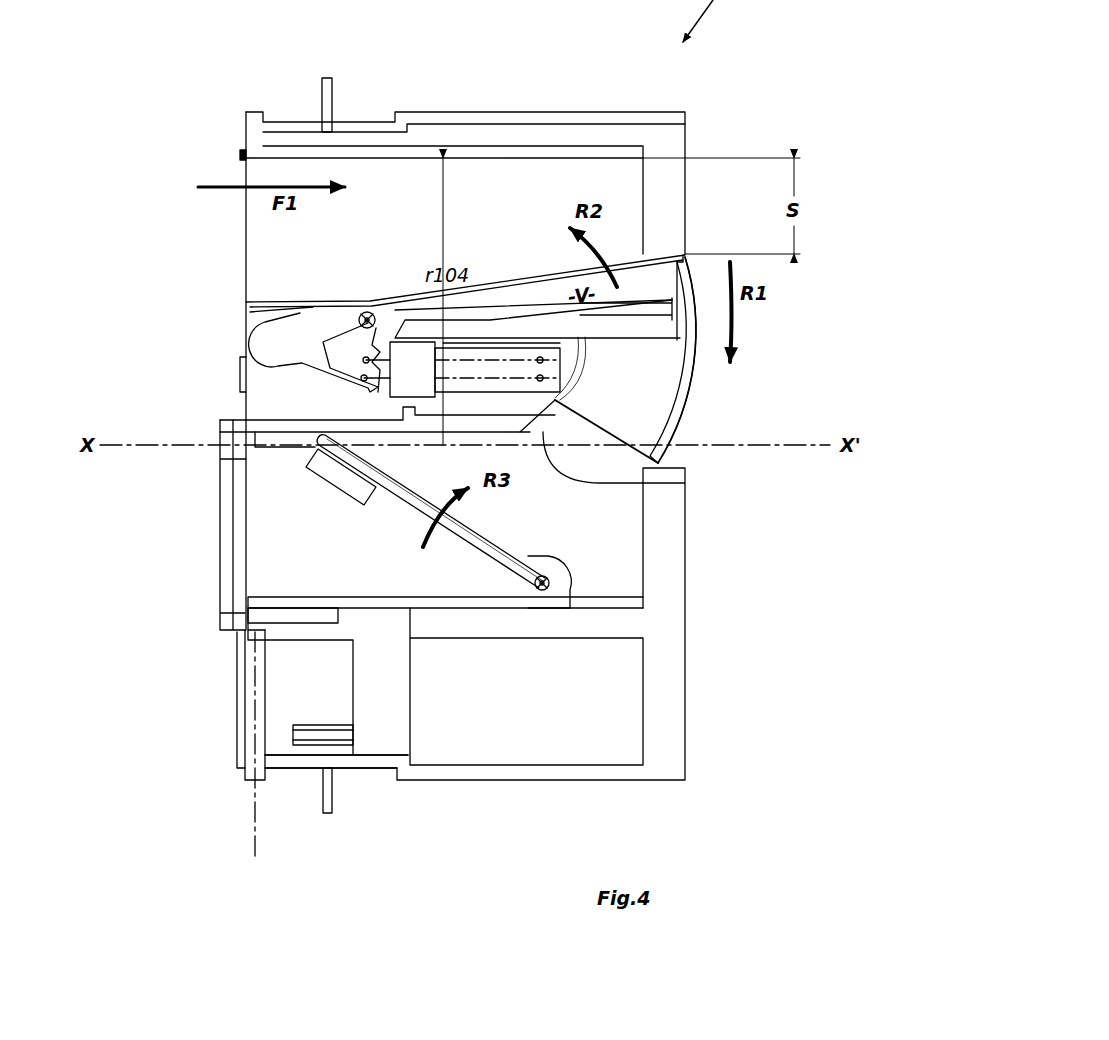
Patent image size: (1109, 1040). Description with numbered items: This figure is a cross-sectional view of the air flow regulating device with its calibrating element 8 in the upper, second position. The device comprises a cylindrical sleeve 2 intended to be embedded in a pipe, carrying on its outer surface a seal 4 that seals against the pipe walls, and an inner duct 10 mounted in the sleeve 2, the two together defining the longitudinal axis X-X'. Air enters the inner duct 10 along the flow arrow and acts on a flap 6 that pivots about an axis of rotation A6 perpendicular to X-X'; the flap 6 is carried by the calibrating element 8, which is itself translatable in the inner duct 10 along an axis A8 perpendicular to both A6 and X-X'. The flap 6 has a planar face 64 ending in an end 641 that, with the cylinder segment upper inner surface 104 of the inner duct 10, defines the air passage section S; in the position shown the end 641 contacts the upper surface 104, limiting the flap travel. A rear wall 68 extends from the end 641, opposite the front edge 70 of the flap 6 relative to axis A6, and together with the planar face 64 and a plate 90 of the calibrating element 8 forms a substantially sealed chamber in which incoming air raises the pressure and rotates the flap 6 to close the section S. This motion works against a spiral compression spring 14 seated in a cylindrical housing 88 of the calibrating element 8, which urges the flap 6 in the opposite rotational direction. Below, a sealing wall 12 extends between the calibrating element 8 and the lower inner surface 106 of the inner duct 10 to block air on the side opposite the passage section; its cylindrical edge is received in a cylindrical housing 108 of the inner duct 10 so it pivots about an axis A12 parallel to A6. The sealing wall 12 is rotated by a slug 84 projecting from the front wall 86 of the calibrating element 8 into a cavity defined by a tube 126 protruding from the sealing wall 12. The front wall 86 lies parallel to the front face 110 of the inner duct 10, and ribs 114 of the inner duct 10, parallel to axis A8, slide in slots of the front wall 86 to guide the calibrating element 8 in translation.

The sleeve 2 is at (487, 112).
The seal 4 is at (350, 763).
The flap 6 is at (516, 274).
The calibrating element 8 is at (297, 428).
The inner duct 10 is at (418, 157).
The sealing wall 12 is at (463, 540).
The spring 14 is at (477, 378).
The planar face 64 is at (620, 260).
The end 641 is at (688, 252).
The rear wall 68 is at (702, 384).
The front edge 70 is at (240, 345).
The slug 84 is at (290, 455).
The front wall 86 is at (227, 468).
The cylindrical housing 88 is at (645, 487).
The plate 90 is at (633, 325).
The upper inner surface 104 is at (535, 200).
The inner surface 106 is at (392, 594).
The cylindrical housing 108 is at (540, 558).
The front face 110 is at (245, 663).
The rib 114 is at (237, 728).
The tube 126 is at (327, 470).
The axis of rotation A6 is at (363, 316).
The translation axis A8 is at (251, 757).
The axis of rotation A12 is at (548, 580).